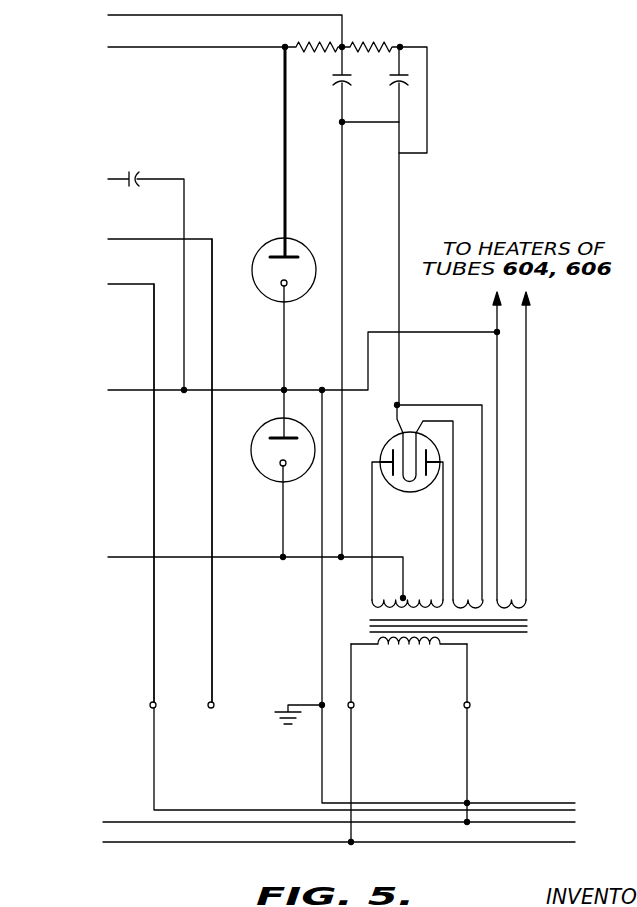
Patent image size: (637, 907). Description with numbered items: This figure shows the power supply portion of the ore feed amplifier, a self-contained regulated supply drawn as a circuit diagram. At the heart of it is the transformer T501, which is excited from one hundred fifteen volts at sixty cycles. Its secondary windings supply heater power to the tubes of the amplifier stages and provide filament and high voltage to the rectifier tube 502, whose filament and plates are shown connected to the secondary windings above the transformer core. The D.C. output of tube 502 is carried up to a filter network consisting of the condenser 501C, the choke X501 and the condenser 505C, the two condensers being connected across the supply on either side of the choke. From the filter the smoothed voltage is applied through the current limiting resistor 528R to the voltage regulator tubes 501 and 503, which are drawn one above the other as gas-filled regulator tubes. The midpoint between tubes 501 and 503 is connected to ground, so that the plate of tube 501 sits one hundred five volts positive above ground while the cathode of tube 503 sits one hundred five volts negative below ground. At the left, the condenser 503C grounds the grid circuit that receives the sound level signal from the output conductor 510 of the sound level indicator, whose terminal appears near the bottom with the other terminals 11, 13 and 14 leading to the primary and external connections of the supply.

The current limiting resistor 528R is at (336, 42).
The choke X501 is at (379, 33).
The condenser 505C is at (332, 76).
The condenser 501C is at (410, 79).
The condenser 503C is at (139, 265).
The voltage regulator tube 501 is at (256, 257).
The voltage regulator tube 503 is at (259, 426).
The tube 502 is at (406, 432).
The transformer T501 is at (492, 633).
The output conductor 510 is at (150, 708).
The terminal 11 is at (214, 707).
The terminal 13 is at (355, 706).
The terminal 14 is at (470, 708).